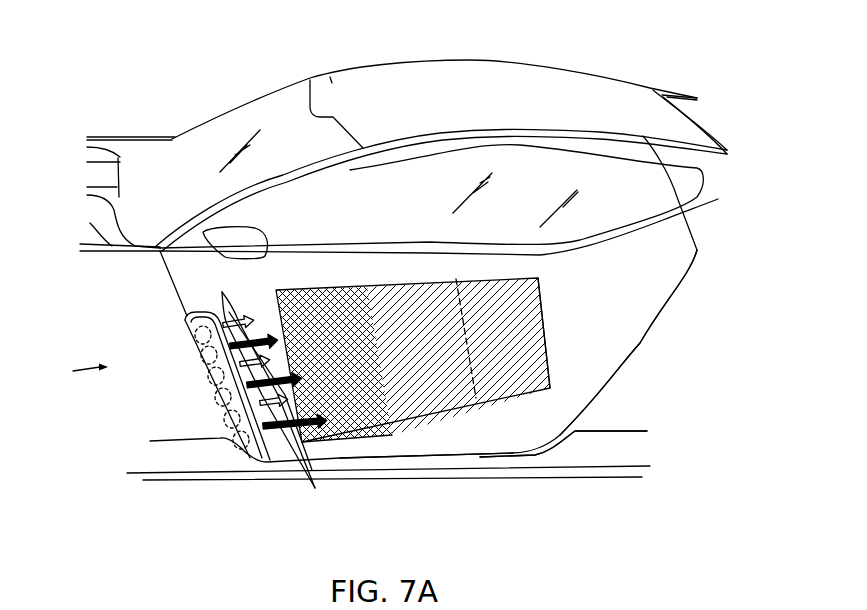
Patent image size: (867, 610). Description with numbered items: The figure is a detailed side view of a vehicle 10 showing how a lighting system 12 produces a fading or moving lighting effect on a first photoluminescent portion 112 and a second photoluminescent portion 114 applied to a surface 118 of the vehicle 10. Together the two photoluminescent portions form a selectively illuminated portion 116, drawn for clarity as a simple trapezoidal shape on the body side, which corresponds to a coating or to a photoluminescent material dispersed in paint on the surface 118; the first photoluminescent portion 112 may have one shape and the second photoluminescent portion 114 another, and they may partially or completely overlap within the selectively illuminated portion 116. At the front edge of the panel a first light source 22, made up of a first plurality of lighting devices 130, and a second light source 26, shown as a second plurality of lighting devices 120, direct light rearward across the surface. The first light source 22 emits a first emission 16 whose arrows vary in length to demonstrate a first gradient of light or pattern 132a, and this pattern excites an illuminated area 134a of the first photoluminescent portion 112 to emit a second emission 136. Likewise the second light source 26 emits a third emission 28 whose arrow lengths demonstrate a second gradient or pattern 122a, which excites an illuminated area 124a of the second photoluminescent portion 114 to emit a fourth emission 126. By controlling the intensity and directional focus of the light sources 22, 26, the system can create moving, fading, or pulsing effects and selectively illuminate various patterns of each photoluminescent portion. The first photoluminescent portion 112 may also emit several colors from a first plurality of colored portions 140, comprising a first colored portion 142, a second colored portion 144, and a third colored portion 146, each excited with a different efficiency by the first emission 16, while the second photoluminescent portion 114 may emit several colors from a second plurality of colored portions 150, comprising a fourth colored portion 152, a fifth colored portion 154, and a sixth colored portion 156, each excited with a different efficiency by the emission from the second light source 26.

The vehicle 10 is at (622, 60).
The lighting system 12 is at (78, 372).
The first emission 16 is at (277, 390).
The first gradient of light or pattern 132a is at (277, 390).
The first light source 22 is at (192, 386).
The first plurality of lighting devices 130 is at (210, 366).
The second light source 26 is at (175, 387).
The second plurality of lighting devices 120 is at (222, 396).
The third emission 28 is at (277, 390).
The second gradient of light or pattern 122a is at (277, 390).
The first photoluminescent portion 112 is at (378, 481).
The illuminated area 134a is at (378, 481).
The second emission 136 is at (359, 424).
The second photoluminescent portion 114 is at (563, 447).
The illuminated area 124a is at (563, 447).
The fourth emission 126 is at (500, 388).
The selectively illuminated portion 116 is at (494, 280).
The surface 118 is at (571, 285).
The first plurality of colored portions 140 is at (398, 283).
The first colored portion 142 is at (334, 365).
The second colored portion 144 is at (456, 360).
The third colored portion 146 is at (456, 360).
The second plurality of colored portions 150 is at (440, 432).
The fourth colored portion 152 is at (345, 338).
The fifth colored portion 154 is at (456, 360).
The sixth colored portion 156 is at (435, 336).